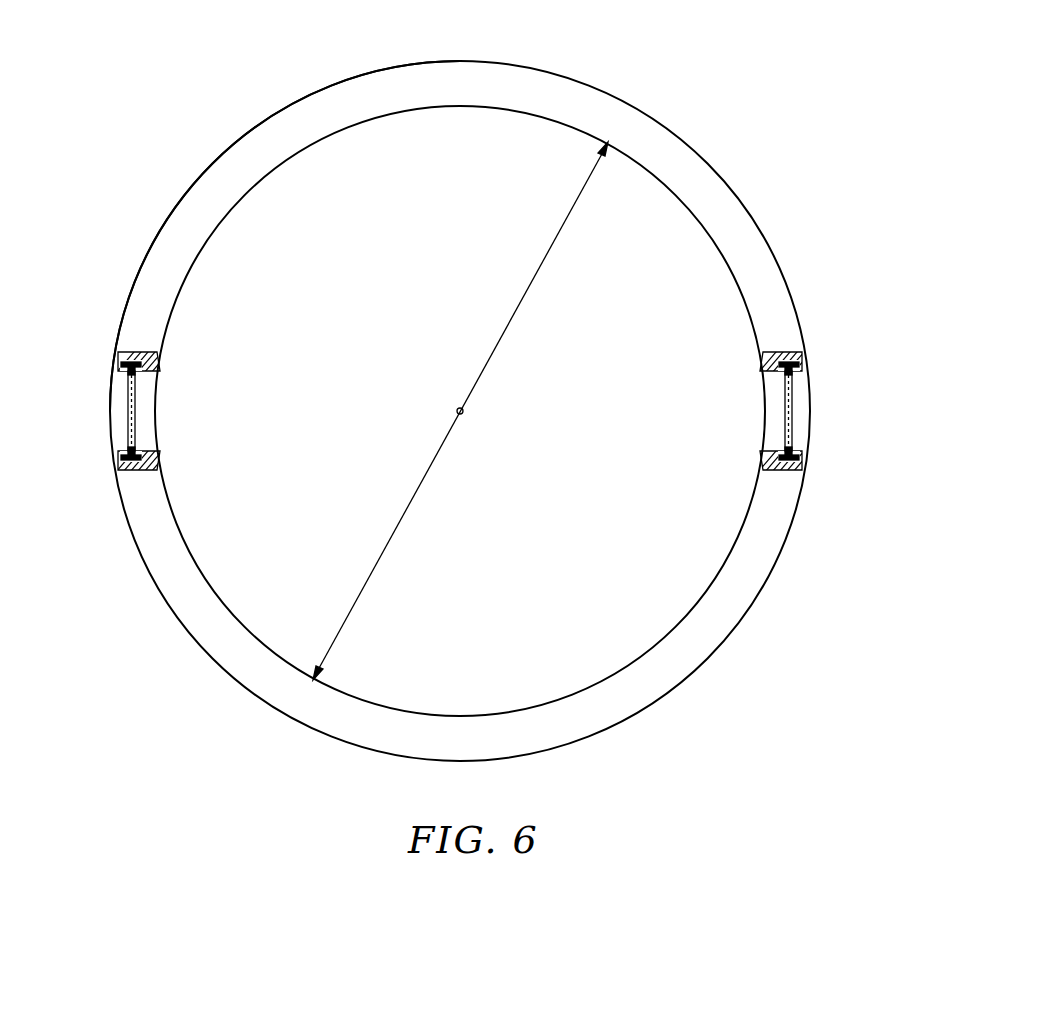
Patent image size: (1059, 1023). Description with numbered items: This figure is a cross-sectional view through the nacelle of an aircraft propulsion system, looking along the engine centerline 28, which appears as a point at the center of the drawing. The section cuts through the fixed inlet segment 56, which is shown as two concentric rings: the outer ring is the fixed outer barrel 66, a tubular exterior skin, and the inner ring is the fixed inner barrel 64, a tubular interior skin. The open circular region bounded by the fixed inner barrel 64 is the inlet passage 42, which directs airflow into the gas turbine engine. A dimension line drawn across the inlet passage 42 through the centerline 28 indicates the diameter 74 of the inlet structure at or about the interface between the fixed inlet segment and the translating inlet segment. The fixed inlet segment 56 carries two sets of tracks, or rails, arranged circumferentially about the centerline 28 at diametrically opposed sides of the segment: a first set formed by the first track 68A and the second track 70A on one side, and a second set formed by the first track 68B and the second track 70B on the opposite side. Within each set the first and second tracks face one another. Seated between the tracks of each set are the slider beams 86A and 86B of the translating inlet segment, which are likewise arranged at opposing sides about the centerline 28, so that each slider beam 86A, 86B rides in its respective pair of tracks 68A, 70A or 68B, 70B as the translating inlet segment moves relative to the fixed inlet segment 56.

The fixed inlet segment 56 is at (686, 114).
The fixed outer barrel 66 is at (173, 212).
The fixed inner barrel 64 is at (212, 236).
The inlet passage 42 is at (449, 322).
The diameter 74 is at (460, 411).
The centerline 28 is at (464, 413).
The first track 68A is at (128, 352).
The first track 68B is at (792, 352).
The second track 70A is at (122, 478).
The second track 70B is at (800, 478).
The slider beam 86A is at (128, 410).
The slider beam 86B is at (792, 410).